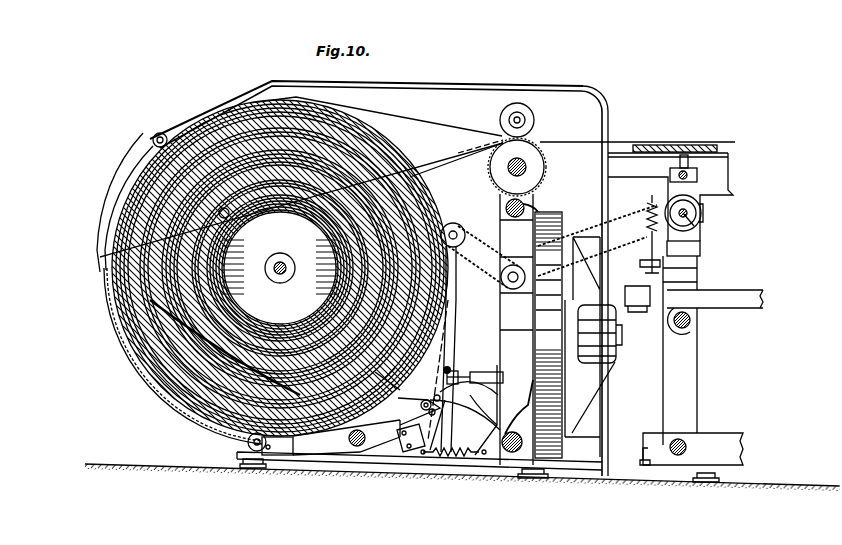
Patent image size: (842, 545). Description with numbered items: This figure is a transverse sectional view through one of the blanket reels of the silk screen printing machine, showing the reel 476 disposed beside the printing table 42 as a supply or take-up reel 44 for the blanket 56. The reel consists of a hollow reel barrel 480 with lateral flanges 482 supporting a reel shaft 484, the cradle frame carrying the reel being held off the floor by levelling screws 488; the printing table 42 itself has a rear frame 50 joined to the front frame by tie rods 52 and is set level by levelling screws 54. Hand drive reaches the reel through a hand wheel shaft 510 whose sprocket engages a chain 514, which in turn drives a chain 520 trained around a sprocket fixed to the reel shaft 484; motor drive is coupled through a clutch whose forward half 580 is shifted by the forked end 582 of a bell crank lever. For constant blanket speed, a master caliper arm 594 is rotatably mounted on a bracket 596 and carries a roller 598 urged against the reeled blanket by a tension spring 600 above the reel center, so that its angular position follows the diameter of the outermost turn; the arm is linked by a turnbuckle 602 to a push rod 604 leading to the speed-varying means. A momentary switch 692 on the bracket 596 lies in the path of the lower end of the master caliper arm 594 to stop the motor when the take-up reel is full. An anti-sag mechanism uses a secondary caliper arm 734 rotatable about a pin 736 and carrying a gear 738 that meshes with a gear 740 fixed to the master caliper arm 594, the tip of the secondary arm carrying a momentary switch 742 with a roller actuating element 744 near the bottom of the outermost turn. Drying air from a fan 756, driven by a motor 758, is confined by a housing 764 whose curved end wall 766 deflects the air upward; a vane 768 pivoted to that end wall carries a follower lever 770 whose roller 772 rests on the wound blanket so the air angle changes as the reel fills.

The printing table 42 is at (712, 490).
The supply or take-up reel 44 is at (203, 478).
The rear frame 50 is at (684, 392).
The tie rods 52 is at (690, 322).
The levelling screws 54 is at (645, 467).
The blanket 56 is at (458, 128).
The reel 476 is at (303, 188).
The reel barrel 480 is at (227, 297).
The lateral flanges 482 is at (312, 82).
The reel shaft 484 is at (281, 253).
The levelling screws 488 is at (253, 468).
The hand wheel shaft 510 is at (695, 238).
The chain 514 is at (623, 217).
The chain 520 is at (481, 253).
The forward clutch half 580 is at (700, 200).
The forked end of bell crank lever 582 is at (704, 222).
The master caliper arm 594 is at (445, 300).
The bracket 596 is at (470, 415).
The roller 598 is at (492, 223).
The tension spring 600 is at (473, 458).
The turnbuckle 602 is at (456, 368).
The push rod 604 is at (483, 372).
The momentary switch 692 is at (405, 456).
The secondary caliper arm 734 is at (335, 437).
The pin 736 is at (395, 388).
The gear 738 is at (392, 366).
The gear 740 is at (472, 396).
The momentary switch 742 is at (283, 456).
The roller actuating element 744 is at (232, 432).
The fan 756 is at (531, 312).
The motor 758 is at (622, 370).
The housing 764 is at (510, 84).
The end wall 766 is at (106, 305).
The vane 768 is at (113, 197).
The follower lever 770 is at (158, 134).
The roller 772 is at (167, 133).